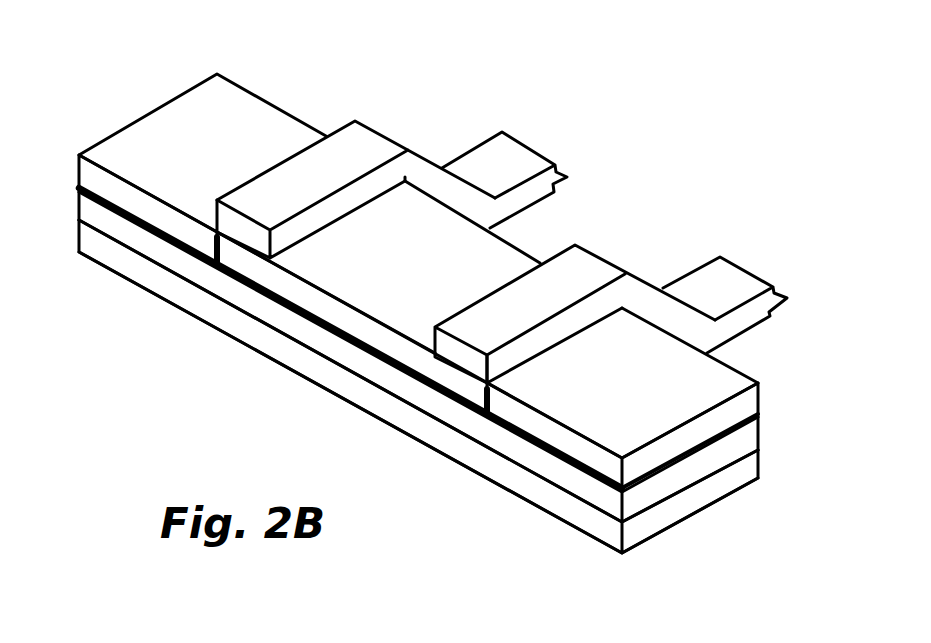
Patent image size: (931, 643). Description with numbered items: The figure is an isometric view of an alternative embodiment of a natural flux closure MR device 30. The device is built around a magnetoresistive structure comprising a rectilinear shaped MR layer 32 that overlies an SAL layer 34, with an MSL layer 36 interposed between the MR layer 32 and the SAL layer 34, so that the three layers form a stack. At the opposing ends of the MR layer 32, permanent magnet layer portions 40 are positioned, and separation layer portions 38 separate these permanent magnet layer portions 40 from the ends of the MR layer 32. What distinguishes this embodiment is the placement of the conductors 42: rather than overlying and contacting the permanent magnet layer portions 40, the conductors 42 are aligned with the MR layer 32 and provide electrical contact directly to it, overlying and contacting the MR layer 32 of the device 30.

The MR device 30 is at (184, 421).
The MR layer 32 is at (445, 267).
The SAL layer 34 is at (97, 242).
The MSL layer 36 is at (90, 208).
The separation layer portions 38 is at (160, 233).
The permanent magnet layer portions 40 is at (170, 110).
The conductors 42 is at (502, 154).